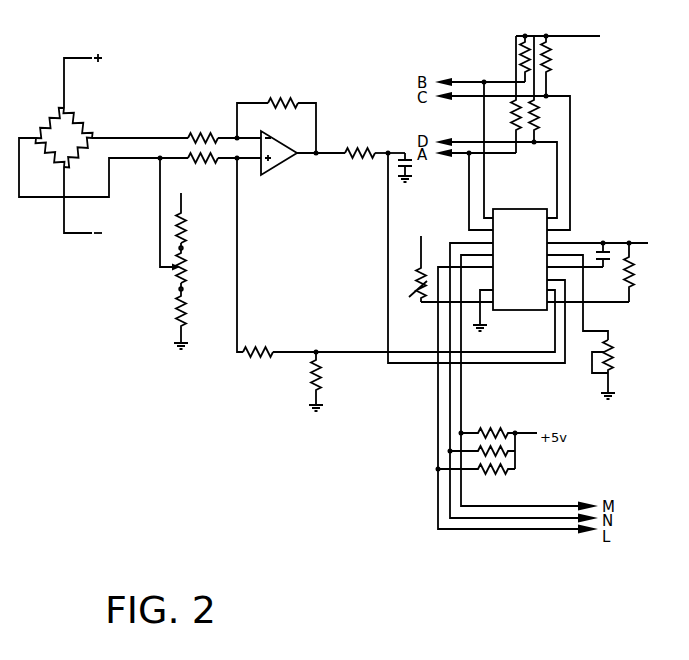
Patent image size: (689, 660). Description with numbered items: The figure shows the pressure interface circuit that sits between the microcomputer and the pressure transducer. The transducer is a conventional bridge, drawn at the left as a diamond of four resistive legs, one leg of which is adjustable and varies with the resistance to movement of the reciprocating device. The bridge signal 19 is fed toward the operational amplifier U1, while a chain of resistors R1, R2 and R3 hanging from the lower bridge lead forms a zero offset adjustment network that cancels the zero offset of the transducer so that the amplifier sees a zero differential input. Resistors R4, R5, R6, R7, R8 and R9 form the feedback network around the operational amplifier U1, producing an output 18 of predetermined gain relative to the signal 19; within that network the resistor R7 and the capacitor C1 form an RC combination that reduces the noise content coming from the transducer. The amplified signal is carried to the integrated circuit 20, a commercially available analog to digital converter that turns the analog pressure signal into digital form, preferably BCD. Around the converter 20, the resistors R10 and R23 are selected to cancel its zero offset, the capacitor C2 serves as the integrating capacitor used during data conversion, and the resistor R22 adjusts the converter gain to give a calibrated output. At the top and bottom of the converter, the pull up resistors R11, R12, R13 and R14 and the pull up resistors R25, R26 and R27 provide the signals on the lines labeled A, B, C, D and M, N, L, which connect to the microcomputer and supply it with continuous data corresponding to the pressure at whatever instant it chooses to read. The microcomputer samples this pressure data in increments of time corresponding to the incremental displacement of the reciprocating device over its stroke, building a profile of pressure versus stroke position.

The output 18 is at (136, 138).
The signal 19 is at (328, 154).
The analog to digital converter 20 is at (518, 208).
The operational amplifier U1 is at (278, 169).
The resistor R1 is at (190, 268).
The resistor R2 is at (194, 310).
The resistor R3 is at (186, 225).
The resistor R4 is at (193, 164).
The resistor R5 is at (217, 135).
The resistor R6 is at (272, 102).
The resistor R7 is at (346, 144).
The resistor R8 is at (252, 350).
The resistor R9 is at (324, 372).
The resistor R10 is at (414, 268).
The pull up resistor R11 is at (504, 94).
The pull up resistor R12 is at (550, 89).
The pull up resistor R13 is at (520, 51).
The pull up resistor R14 is at (550, 46).
The resistor R22 is at (612, 358).
The resistor R23 is at (634, 271).
The pull up resistor R25 is at (482, 473).
The pull up resistor R26 is at (508, 450).
The pull up resistor R27 is at (484, 432).
The capacitor C1 is at (411, 166).
The integrating capacitor C2 is at (604, 267).